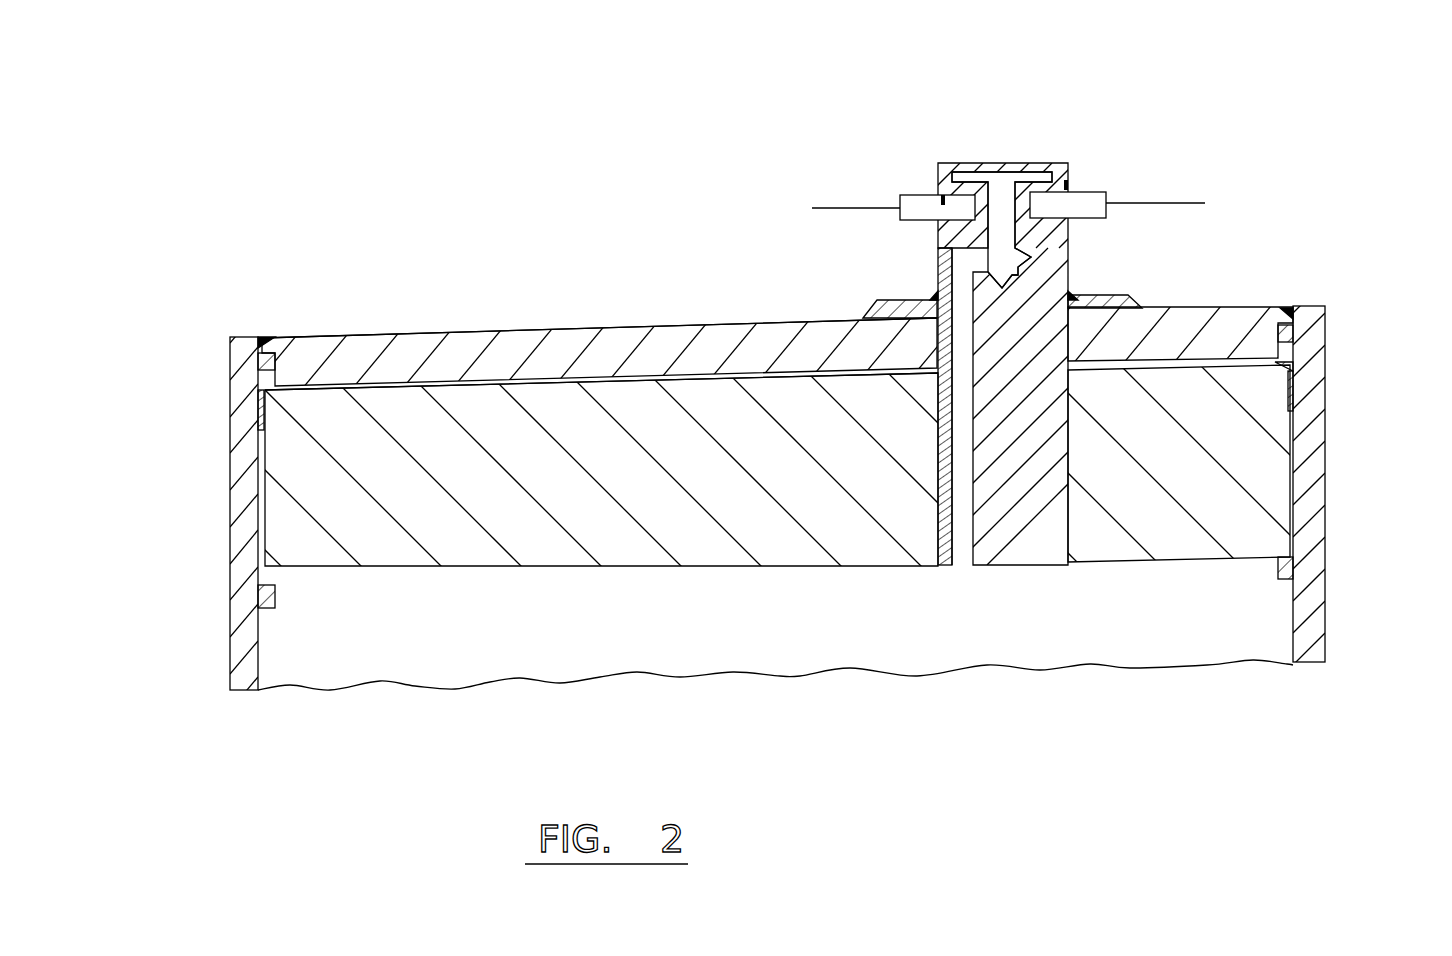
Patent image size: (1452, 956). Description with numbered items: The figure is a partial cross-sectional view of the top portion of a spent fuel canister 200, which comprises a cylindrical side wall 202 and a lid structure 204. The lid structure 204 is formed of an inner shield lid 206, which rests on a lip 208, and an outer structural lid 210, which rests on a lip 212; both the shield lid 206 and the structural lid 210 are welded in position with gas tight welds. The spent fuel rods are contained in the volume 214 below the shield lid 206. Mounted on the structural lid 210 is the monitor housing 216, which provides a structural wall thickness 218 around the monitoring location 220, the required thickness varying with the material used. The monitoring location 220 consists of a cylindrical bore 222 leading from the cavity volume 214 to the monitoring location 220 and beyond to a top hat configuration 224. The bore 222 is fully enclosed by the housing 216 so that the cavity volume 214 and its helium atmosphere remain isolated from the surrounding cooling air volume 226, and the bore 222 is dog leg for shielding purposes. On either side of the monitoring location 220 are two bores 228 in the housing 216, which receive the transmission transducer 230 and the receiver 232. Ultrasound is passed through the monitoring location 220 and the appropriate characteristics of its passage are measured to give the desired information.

The canister 200 is at (477, 314).
The cylindrical side wall 202 is at (1327, 514).
The lid structure 204 is at (388, 318).
The inner shield lid 206 is at (578, 428).
The lip 208 is at (280, 614).
The outer structural lid 210 is at (706, 343).
The lip 212 is at (258, 360).
The volume 214 is at (712, 632).
The monitor housing 216 is at (1074, 158).
The structural wall thickness 218 is at (940, 282).
The monitoring location 220 is at (1043, 175).
The cylindrical bore 222 is at (963, 513).
The top hat configuration 224 is at (1001, 178).
The cooling air volume 226 is at (692, 146).
The bores 228 is at (944, 195).
The transmission transducer 230 is at (926, 203).
The receiver 232 is at (1100, 211).